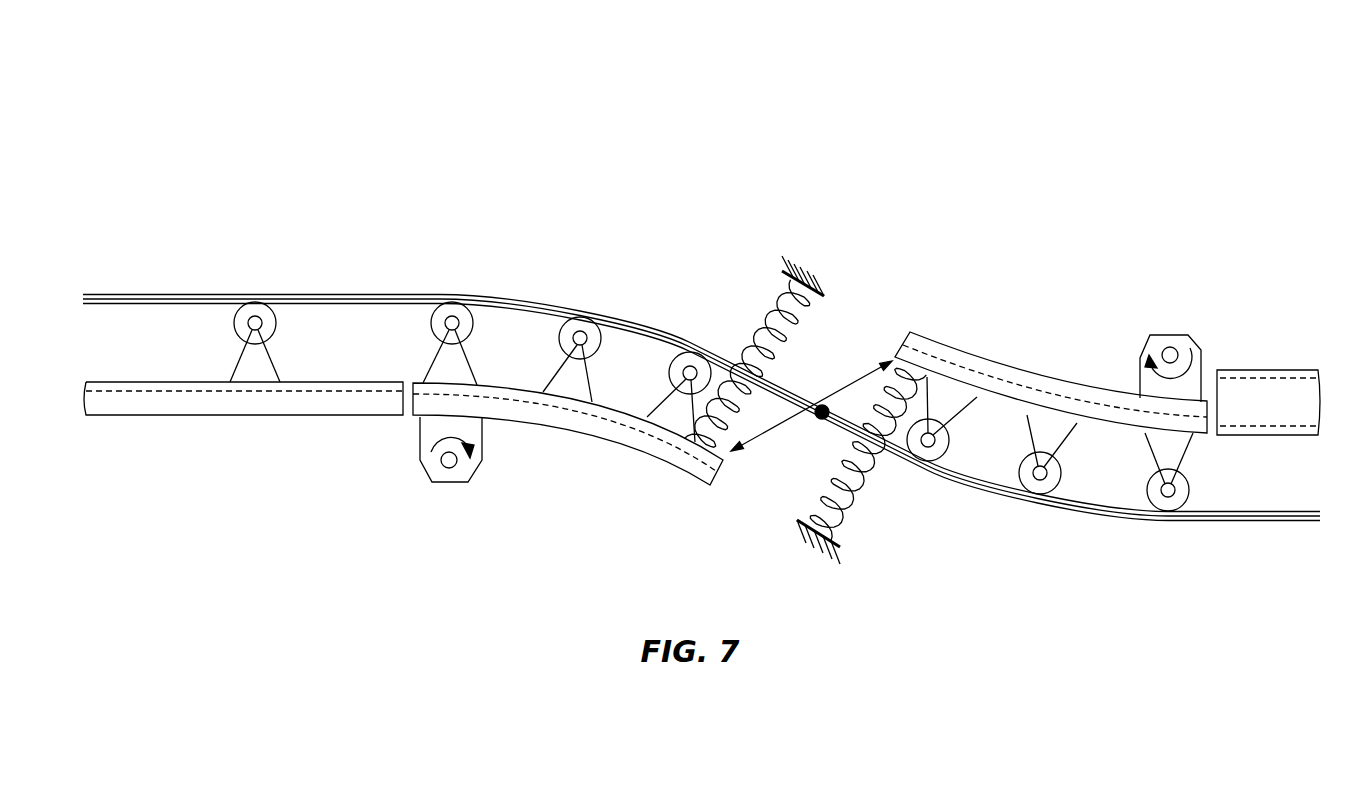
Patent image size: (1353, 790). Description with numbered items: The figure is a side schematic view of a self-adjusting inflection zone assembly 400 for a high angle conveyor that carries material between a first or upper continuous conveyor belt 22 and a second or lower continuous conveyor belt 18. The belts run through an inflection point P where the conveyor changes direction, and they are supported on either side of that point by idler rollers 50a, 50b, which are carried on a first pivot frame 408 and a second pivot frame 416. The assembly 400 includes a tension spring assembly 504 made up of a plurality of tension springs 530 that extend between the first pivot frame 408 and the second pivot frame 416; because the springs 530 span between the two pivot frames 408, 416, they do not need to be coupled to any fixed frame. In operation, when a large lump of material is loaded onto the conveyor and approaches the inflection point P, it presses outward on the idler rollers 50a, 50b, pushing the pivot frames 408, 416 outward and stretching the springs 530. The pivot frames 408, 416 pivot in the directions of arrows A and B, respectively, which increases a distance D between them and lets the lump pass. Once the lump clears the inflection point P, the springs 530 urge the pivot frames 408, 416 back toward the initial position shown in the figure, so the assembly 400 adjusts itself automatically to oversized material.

The self-adjusting inflection zone assembly 400 is at (158, 159).
The second or lower continuous conveyor belt 18 is at (225, 301).
The first or upper continuous conveyor belt 22 is at (327, 296).
The idler rollers 50a is at (1163, 510).
The idler rollers 50b is at (745, 372).
The second pivot frame 416 is at (593, 432).
The first pivot frame 408 is at (1045, 392).
The tension springs 530 is at (748, 347).
The tension spring assembly 504 is at (851, 283).
The arrow A is at (1172, 380).
The arrow B is at (448, 437).
The distance D is at (823, 398).
The inflection point P is at (824, 425).